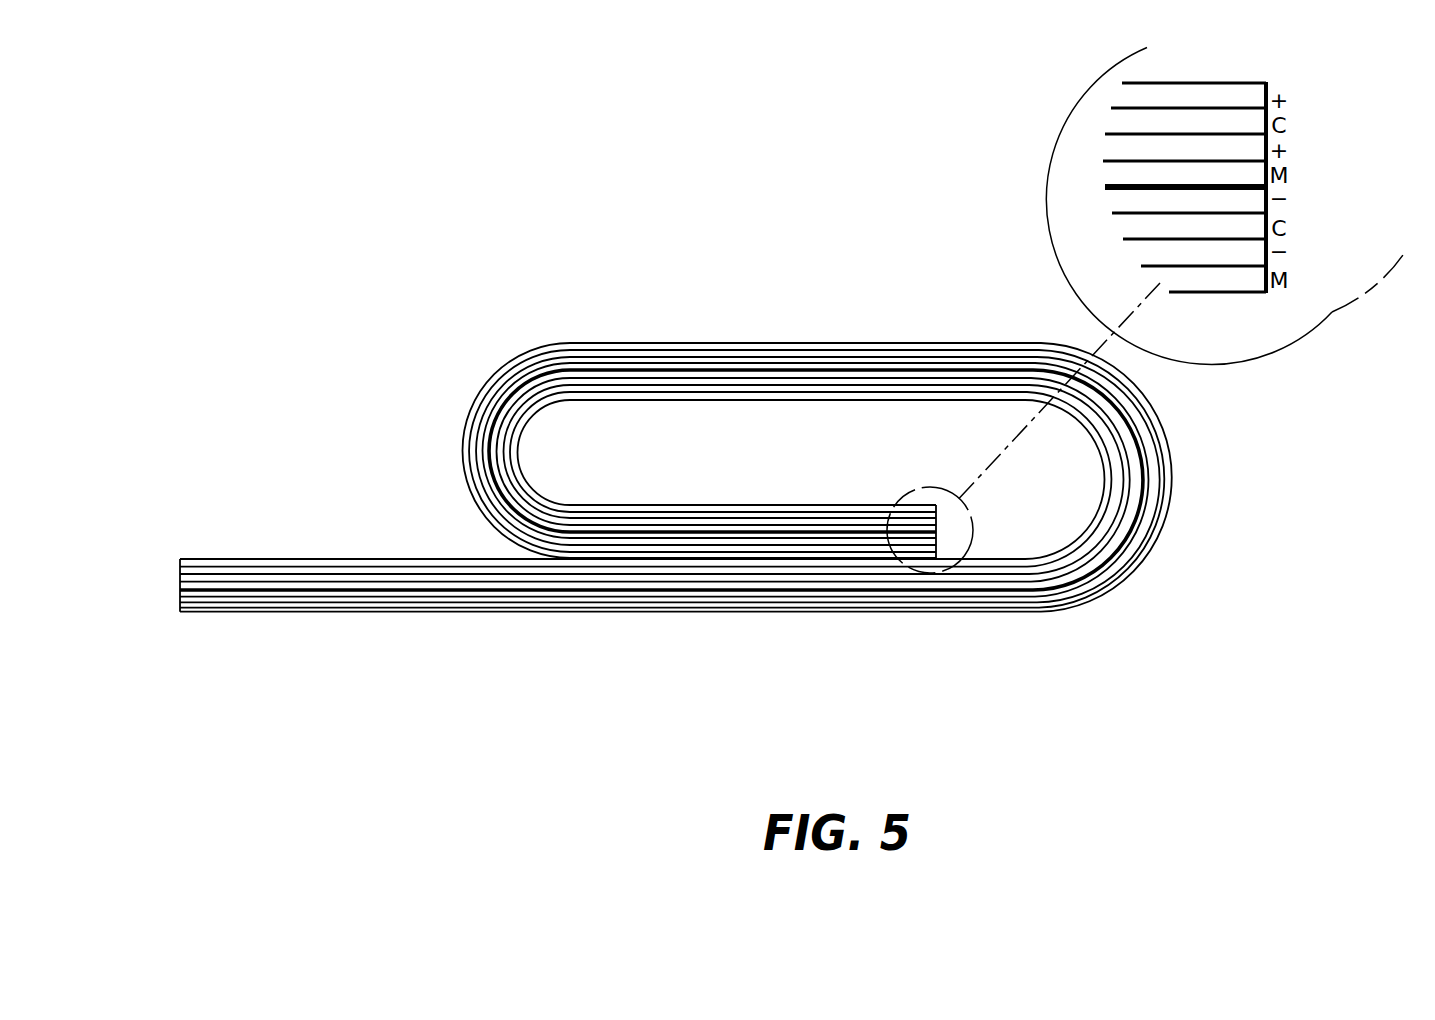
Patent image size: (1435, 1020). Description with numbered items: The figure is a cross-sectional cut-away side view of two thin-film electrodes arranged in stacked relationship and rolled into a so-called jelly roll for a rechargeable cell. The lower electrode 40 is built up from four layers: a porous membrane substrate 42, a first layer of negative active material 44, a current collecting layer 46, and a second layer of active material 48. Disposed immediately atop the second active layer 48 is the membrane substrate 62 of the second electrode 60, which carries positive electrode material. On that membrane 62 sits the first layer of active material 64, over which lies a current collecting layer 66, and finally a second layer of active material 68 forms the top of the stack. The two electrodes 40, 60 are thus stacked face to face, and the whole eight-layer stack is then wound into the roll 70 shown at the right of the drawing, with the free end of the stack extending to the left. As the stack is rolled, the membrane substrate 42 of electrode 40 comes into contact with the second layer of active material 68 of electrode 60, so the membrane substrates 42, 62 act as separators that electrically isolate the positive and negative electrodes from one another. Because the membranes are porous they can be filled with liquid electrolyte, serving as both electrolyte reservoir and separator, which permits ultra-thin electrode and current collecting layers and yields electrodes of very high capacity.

The electrode 40 is at (176, 590).
The substrate 42 is at (183, 610).
The first layer of negative active material 44 is at (235, 602).
The current collecting layer 46 is at (280, 595).
The second layer of active material 48 is at (330, 590).
The electrode 60 is at (176, 560).
The membrane substrate 62 is at (375, 582).
The first layer of active material 64 is at (428, 573).
The current collecting layer 66 is at (483, 567).
The second layer of active material 68 is at (538, 560).
The roll 70 is at (1022, 343).